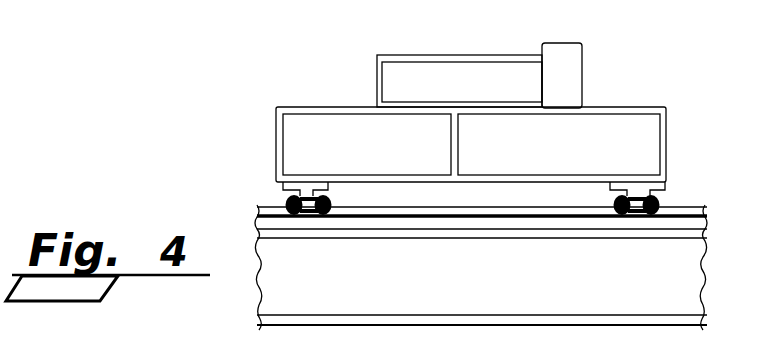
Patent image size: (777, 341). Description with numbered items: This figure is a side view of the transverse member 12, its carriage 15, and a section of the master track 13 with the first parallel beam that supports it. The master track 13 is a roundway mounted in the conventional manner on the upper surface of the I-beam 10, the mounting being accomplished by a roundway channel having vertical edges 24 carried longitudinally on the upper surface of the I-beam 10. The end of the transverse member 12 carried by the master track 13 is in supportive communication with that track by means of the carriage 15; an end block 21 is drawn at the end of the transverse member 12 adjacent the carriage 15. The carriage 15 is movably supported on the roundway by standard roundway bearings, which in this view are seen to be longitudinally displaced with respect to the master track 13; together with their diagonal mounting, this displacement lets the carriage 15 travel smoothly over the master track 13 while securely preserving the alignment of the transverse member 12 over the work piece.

The I-beam 10 is at (393, 289).
The transverse member 12 is at (449, 73).
The master track 13 is at (470, 208).
The carriage 15 is at (299, 129).
The end block 21 is at (572, 60).
The vertical edges 24 is at (452, 222).